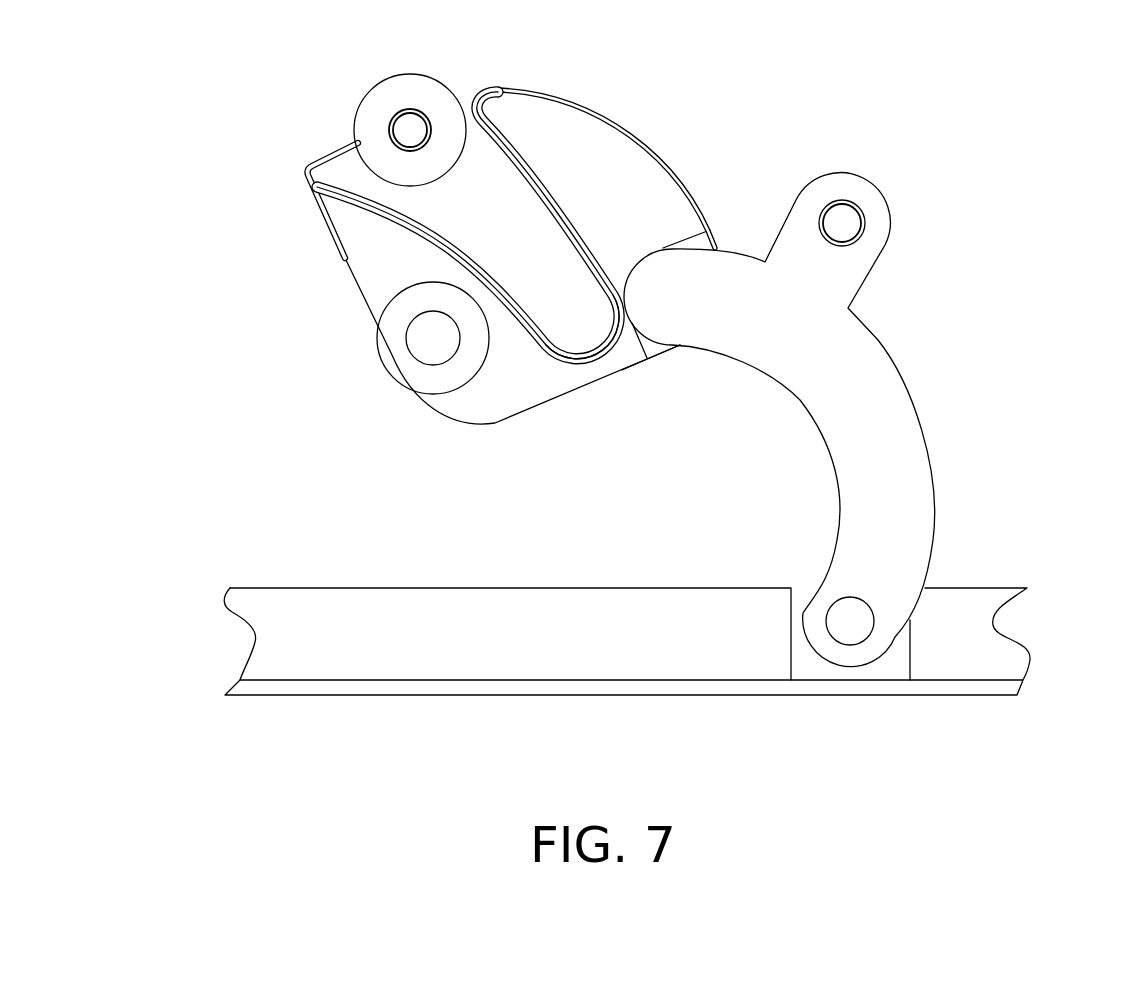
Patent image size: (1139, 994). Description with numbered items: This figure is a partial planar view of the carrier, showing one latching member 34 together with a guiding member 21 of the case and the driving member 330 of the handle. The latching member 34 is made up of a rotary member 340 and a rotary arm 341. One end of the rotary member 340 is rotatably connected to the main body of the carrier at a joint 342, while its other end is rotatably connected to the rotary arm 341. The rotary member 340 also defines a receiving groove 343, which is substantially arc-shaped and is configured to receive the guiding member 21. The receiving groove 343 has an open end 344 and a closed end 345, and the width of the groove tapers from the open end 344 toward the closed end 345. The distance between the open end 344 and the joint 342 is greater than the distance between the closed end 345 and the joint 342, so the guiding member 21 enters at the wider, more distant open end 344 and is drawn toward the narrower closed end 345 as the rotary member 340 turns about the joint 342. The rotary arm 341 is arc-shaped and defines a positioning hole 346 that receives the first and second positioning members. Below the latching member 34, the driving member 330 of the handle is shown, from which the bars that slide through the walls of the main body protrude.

The latching member 34 is at (217, 112).
The guiding member 21 is at (400, 115).
The driving member 330 is at (960, 607).
The rotary member 340 is at (323, 226).
The rotary arm 341 is at (895, 450).
The joint 342 is at (420, 340).
The receiving groove 343 is at (505, 182).
The open end 344 is at (330, 142).
The closed end 345 is at (558, 335).
The positioning hole 346 is at (845, 225).